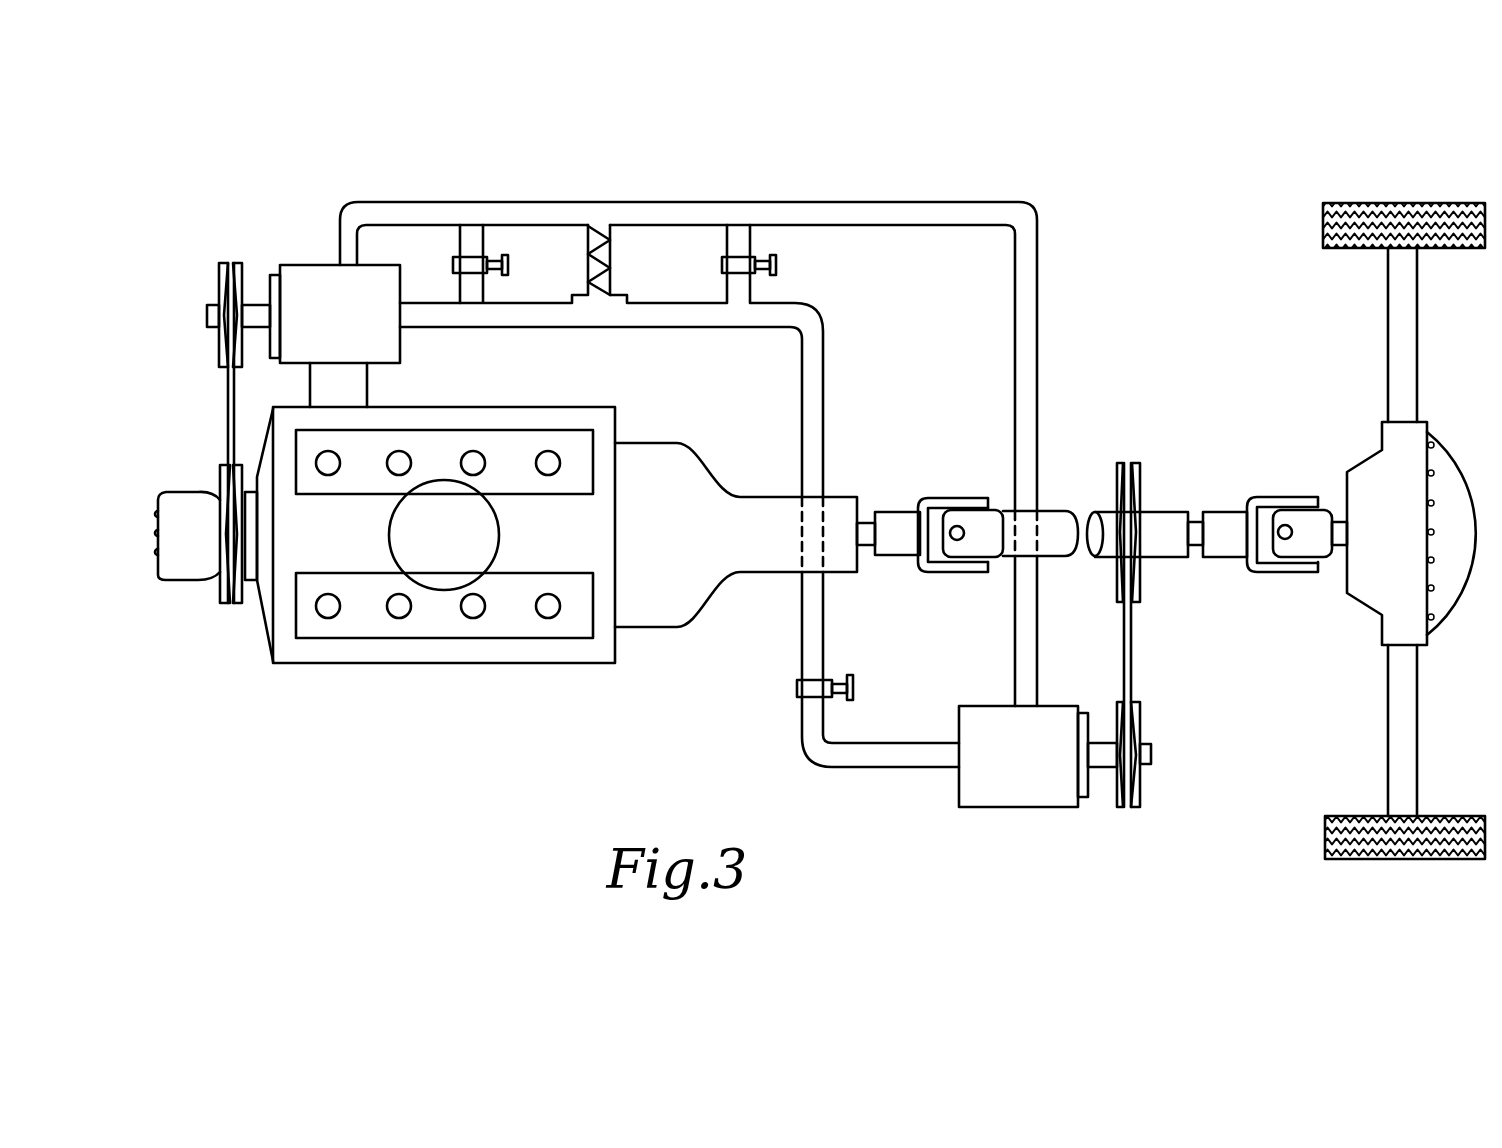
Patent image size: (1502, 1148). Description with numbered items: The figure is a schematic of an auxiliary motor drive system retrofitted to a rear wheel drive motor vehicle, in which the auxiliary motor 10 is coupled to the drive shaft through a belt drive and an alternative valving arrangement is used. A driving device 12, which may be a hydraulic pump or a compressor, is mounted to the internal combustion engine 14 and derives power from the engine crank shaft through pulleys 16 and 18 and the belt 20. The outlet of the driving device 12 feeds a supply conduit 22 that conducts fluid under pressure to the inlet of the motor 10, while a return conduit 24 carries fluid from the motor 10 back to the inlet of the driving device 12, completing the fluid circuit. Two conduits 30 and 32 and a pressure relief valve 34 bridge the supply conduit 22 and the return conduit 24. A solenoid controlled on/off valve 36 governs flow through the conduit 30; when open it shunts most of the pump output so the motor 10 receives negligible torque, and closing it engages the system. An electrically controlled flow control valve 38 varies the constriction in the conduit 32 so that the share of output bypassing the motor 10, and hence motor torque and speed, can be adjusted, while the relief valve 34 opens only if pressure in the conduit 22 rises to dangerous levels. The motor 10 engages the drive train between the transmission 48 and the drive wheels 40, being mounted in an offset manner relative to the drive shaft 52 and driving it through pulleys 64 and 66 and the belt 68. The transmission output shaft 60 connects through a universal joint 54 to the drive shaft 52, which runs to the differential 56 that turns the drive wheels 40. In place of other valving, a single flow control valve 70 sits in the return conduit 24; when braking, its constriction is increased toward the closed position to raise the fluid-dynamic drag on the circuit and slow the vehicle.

The auxiliary motor 10 is at (990, 797).
The driving device 12 is at (318, 280).
The internal combustion engine 14 is at (512, 623).
The pulley 16 is at (220, 490).
The pulley 18 is at (238, 268).
The belt 20 is at (228, 410).
The supply conduit 22 is at (855, 205).
The return conduit 24 is at (665, 320).
The conduit 30 is at (482, 236).
The conduit 32 is at (755, 238).
The pressure relief valve 34 is at (612, 243).
The solenoid controlled on/off valve 36 is at (470, 270).
The electrically controlled flow control valve 38 is at (752, 266).
The drive wheels 40 is at (1398, 212).
The transmission 48 is at (685, 598).
The drive shaft 52 is at (1172, 550).
The universal joint 54 is at (962, 565).
The differential 56 is at (1450, 470).
The transmission output shaft 60 is at (858, 530).
The pulley 64 is at (1135, 727).
The pulley 66 is at (1138, 490).
The belt 68 is at (1128, 648).
The flow control valve 70 is at (818, 688).